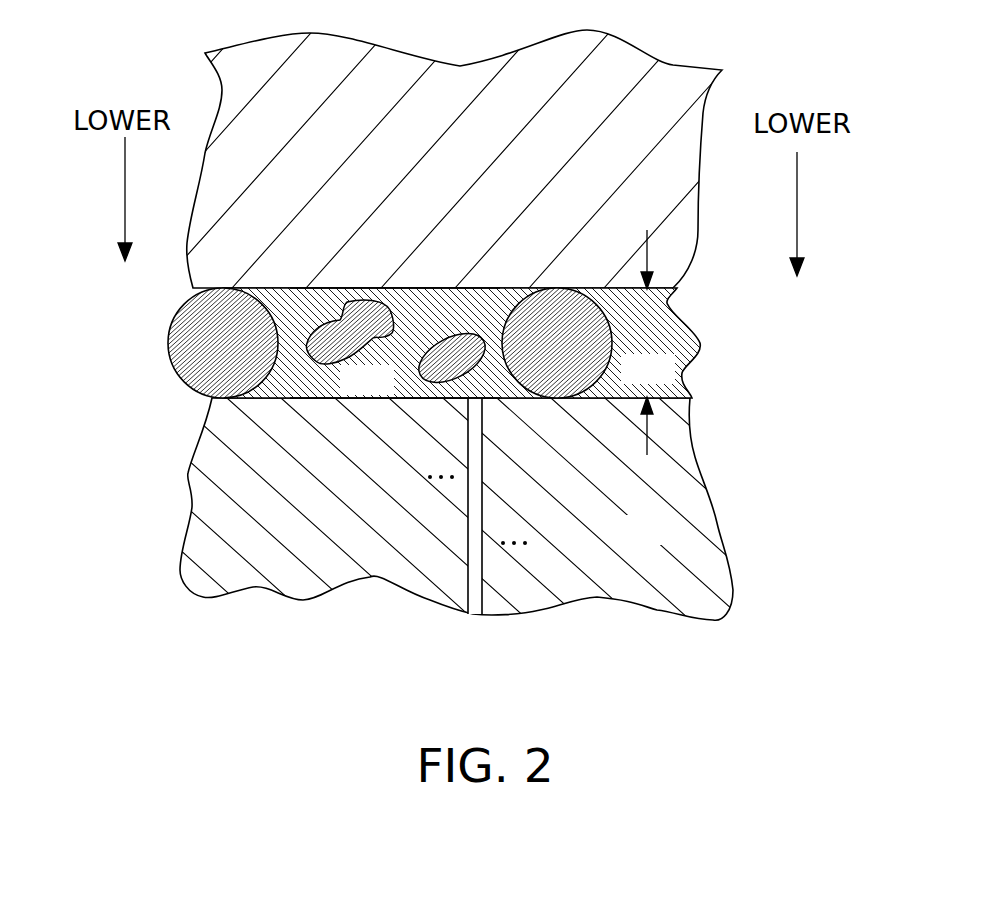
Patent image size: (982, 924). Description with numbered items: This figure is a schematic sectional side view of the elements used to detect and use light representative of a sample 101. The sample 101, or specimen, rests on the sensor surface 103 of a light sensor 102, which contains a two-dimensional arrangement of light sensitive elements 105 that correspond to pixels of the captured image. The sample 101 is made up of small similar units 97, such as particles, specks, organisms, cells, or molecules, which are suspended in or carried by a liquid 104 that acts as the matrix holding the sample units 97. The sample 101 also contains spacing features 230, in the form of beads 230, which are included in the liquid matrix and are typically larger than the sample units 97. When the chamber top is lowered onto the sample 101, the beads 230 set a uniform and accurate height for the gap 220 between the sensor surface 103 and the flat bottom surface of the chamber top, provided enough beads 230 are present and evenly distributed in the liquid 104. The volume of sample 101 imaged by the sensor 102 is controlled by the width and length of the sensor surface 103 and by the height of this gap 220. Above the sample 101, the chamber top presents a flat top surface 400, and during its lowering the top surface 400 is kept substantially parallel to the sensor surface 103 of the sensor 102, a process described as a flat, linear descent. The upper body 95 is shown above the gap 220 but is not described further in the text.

The upper substrate 95 is at (597, 166).
The sample 101 is at (467, 343).
The light sensor 102 is at (627, 541).
The sensor surface 103 is at (262, 400).
The liquid 104 is at (344, 391).
The light sensitive elements 105 is at (482, 480).
The units 97 is at (353, 307).
The spacing features 230 is at (222, 297).
The top surface 400 is at (508, 288).
The gap 220 is at (647, 260).